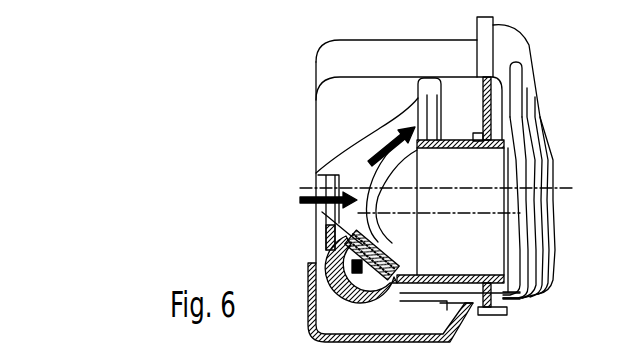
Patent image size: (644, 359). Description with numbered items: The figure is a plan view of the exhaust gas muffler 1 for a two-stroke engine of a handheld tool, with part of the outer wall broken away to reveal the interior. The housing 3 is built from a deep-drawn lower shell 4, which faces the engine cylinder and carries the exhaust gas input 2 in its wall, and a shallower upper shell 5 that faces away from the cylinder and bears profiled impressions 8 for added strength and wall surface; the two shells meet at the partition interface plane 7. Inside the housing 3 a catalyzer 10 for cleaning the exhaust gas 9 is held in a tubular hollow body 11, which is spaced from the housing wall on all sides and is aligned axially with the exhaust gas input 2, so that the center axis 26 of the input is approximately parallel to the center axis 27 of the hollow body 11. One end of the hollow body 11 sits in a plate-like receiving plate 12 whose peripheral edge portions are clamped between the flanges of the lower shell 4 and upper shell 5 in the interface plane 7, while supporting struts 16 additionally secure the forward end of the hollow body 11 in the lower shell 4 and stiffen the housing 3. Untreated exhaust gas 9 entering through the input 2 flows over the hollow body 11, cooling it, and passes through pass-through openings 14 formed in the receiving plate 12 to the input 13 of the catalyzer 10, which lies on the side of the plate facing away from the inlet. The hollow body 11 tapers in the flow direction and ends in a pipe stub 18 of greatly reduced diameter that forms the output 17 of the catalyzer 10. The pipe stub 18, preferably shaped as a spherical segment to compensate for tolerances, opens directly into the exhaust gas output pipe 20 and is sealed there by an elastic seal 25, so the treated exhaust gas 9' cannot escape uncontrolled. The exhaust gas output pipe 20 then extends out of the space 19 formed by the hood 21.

The muffler 1 is at (560, 246).
The exhaust gas input 2 is at (309, 223).
The housing 3 is at (477, 33).
The lower shell 4 is at (316, 76).
The upper shell 5 is at (520, 50).
The partition interface plane 7 is at (498, 314).
The profiled impressions 8 is at (528, 90).
The exhaust gas 9 is at (322, 205).
The treated exhaust gas 9' is at (411, 232).
The catalyzer 10 is at (457, 259).
The hollow body 11 is at (527, 140).
The receiving plate 12 is at (523, 118).
The input 13 is at (508, 172).
The pass-through openings 14 is at (480, 97).
The supporting struts 16 is at (443, 122).
The output 17 is at (375, 219).
The pipe stub 18 is at (393, 257).
The space 19 is at (423, 329).
The exhaust gas output pipe 20 is at (313, 248).
The hood 21 is at (308, 297).
The seal 25 is at (313, 210).
The center axis of the exhaust gas input 26 is at (565, 190).
The center axis of the hollow body 27 is at (494, 217).